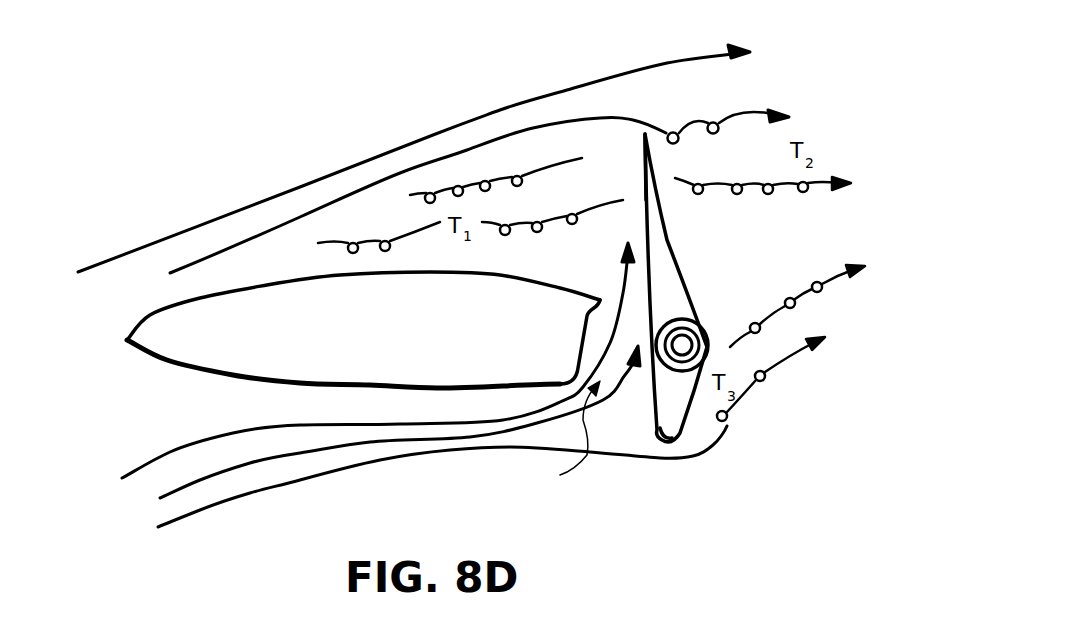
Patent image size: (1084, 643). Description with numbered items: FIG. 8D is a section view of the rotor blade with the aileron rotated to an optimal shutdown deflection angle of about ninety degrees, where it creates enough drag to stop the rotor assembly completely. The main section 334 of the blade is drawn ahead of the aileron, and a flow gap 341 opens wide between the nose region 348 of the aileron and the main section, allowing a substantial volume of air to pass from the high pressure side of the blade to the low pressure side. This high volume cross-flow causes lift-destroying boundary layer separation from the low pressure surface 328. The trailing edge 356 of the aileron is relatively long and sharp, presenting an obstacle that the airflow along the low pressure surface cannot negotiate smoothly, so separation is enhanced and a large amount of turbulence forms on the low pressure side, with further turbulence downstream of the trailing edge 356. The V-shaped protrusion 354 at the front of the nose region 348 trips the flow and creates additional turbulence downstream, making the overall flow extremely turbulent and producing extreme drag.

The low pressure surface 328 is at (503, 280).
The main section 334 is at (363, 315).
The flow gap 341 is at (551, 439).
The nose region 348 is at (716, 321).
The V-shaped protrusion 354 is at (670, 433).
The trailing edge 356 is at (653, 178).